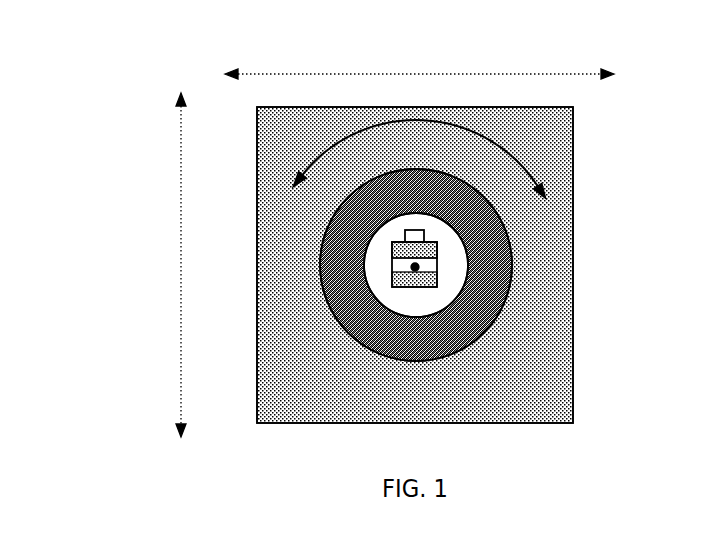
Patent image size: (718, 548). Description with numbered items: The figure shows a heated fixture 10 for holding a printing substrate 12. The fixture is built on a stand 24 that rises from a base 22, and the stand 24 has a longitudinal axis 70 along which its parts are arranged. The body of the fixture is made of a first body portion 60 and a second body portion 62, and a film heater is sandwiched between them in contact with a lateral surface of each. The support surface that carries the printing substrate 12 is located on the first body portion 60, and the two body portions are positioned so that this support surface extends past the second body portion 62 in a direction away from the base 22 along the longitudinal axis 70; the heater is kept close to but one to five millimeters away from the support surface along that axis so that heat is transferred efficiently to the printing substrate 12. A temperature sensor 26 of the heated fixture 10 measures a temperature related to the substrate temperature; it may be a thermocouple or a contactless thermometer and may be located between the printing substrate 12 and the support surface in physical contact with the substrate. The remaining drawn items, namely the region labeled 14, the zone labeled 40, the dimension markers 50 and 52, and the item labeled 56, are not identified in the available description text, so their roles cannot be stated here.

The heated fixture 10 is at (219, 43).
The printing substrate 12 is at (392, 270).
The mat 14 is at (563, 160).
The base 22 is at (421, 300).
The stand 24 is at (380, 250).
The temperature sensor 26 is at (413, 227).
The intermediate region 40 is at (473, 327).
The width 50 is at (527, 73).
The length 52 is at (182, 396).
The outer region 56 is at (301, 160).
The first body portion 60 is at (437, 267).
The second body portion 62 is at (397, 300).
The longitudinal axis 70 is at (506, 302).